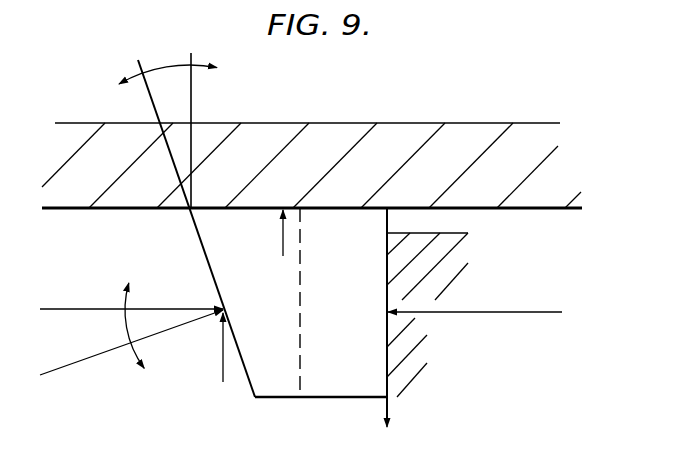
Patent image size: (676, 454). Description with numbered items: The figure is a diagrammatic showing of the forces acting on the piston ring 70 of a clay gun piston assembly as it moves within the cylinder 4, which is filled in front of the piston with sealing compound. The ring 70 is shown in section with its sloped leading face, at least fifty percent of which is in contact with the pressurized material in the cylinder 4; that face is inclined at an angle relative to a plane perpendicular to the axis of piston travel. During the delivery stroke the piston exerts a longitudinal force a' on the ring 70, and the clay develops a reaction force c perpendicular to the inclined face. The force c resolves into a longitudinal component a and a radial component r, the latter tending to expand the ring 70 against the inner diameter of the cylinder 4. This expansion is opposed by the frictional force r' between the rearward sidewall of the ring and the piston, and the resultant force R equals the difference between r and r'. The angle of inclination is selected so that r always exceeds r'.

The cylinder 4 is at (426, 132).
The piston ring 70 is at (358, 336).
The longitudinal component a is at (131, 298).
The reaction force c is at (131, 342).
The resultant force R is at (273, 234).
The radial component r is at (214, 347).
The frictional force r' is at (396, 412).
The longitudinal force a' is at (475, 301).